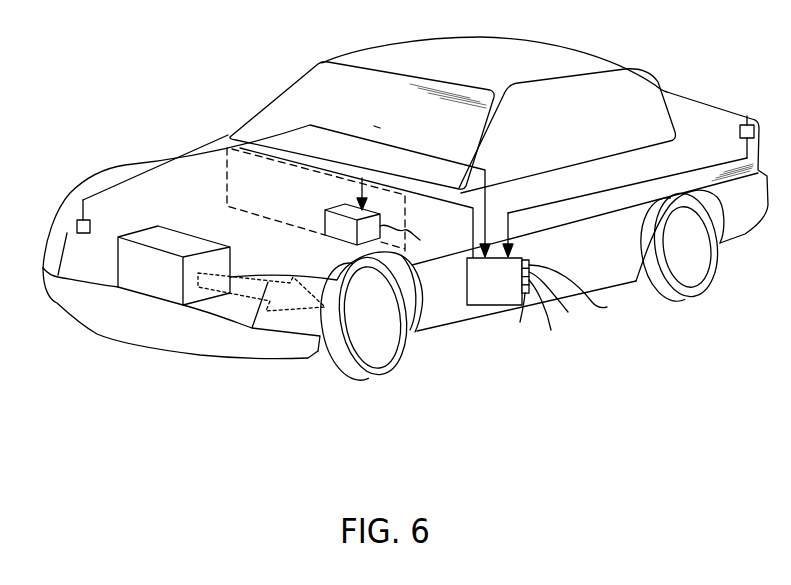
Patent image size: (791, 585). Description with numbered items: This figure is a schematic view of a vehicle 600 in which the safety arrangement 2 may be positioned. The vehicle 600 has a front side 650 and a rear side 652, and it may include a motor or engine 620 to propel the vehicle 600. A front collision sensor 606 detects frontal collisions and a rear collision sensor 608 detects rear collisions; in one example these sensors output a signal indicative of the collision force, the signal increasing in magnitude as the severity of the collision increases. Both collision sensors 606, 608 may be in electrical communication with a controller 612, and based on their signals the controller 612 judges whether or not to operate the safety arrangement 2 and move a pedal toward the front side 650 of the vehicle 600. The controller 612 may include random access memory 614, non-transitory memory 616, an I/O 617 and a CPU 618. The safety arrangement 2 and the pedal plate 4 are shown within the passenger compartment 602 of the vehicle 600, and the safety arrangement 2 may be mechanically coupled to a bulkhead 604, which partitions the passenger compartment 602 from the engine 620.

The vehicle 600 is at (468, 38).
The passenger compartment 602 is at (378, 127).
The bulkhead 604 is at (227, 189).
The front collision sensor 606 is at (75, 220).
The rear collision sensor 608 is at (746, 113).
The controller 612 is at (498, 259).
The random access memory 614 is at (510, 319).
The non-transitory memory 616 is at (583, 293).
The I/O 617 is at (561, 302).
The CPU 618 is at (551, 316).
The engine 620 is at (221, 268).
The front side 650 is at (117, 333).
The rear side 652 is at (702, 99).
The safety arrangement 2 is at (330, 228).
The pedal plate 4 is at (420, 240).